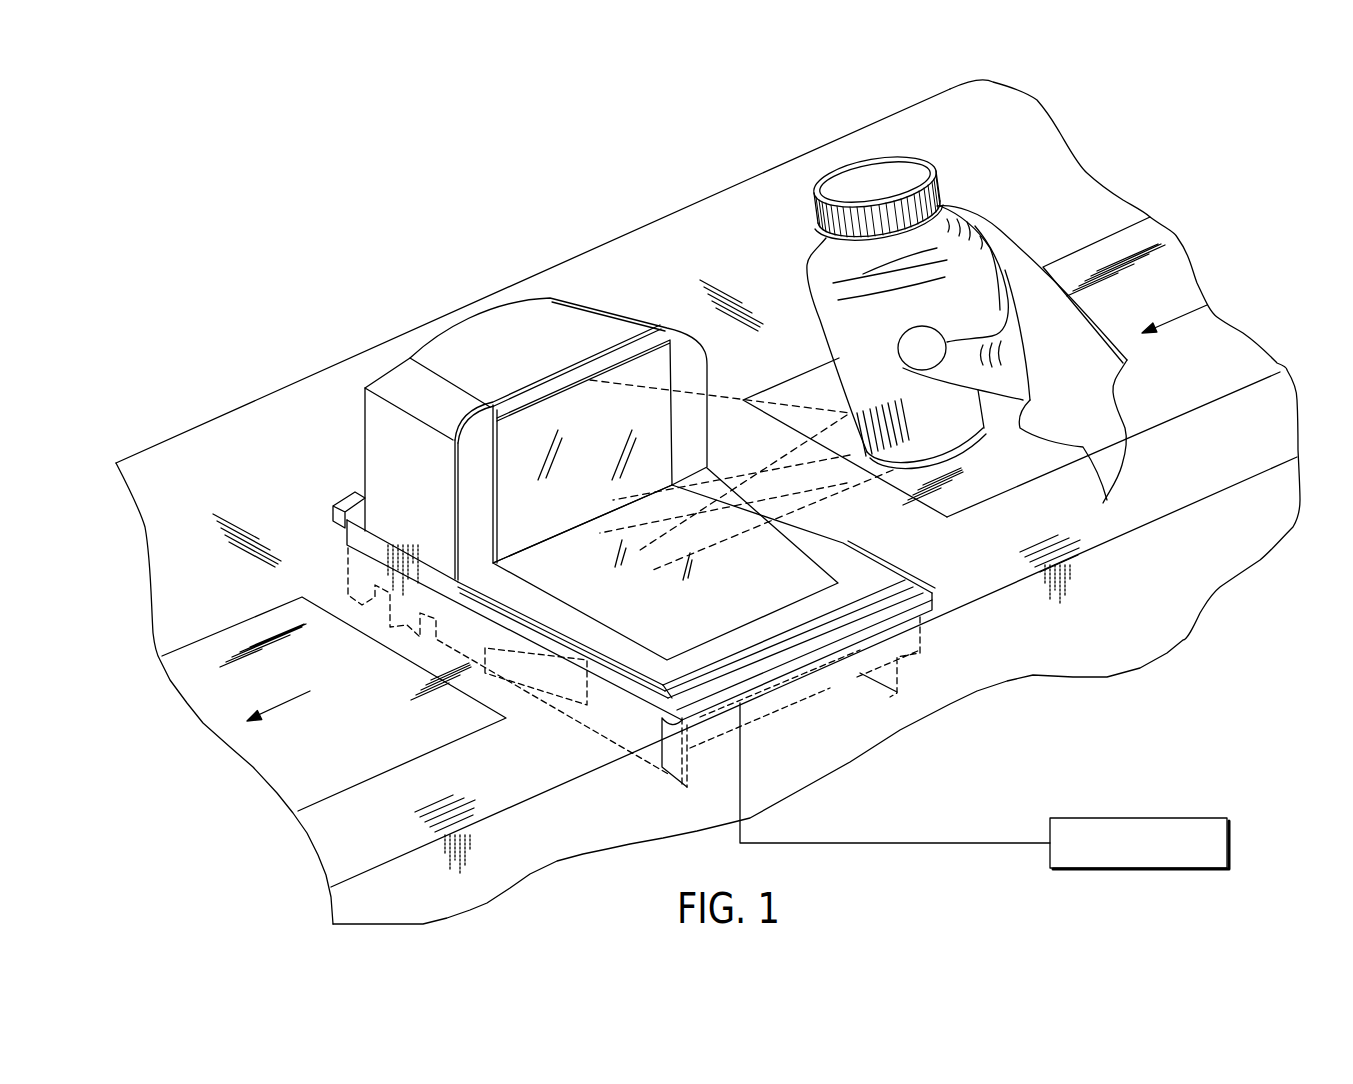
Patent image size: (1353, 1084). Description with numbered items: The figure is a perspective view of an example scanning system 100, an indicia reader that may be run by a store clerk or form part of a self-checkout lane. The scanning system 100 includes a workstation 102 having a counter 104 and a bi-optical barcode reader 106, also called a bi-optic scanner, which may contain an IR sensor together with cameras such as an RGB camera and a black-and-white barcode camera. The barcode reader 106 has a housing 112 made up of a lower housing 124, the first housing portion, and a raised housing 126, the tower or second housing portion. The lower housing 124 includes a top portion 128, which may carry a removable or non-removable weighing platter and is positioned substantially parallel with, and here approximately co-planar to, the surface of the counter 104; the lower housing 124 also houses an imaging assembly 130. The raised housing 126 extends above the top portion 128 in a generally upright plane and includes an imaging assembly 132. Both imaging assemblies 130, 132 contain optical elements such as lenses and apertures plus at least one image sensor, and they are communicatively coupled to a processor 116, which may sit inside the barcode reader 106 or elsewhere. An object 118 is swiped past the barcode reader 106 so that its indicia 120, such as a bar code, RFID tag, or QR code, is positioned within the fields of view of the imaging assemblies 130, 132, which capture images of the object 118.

The scanning system 100 is at (176, 195).
The workstation 102 is at (670, 184).
The counter 104 is at (1025, 112).
The bi-optical barcode reader 106 is at (373, 478).
The housing 112 is at (397, 462).
The processor 116 is at (1230, 845).
The object 118 is at (975, 262).
The indicia 120 is at (900, 440).
The lower housing 124 is at (620, 778).
The raised housing 126 is at (437, 318).
The top portion 128 is at (650, 668).
The imaging assembly 130 is at (785, 570).
The imaging assembly 132 is at (537, 417).